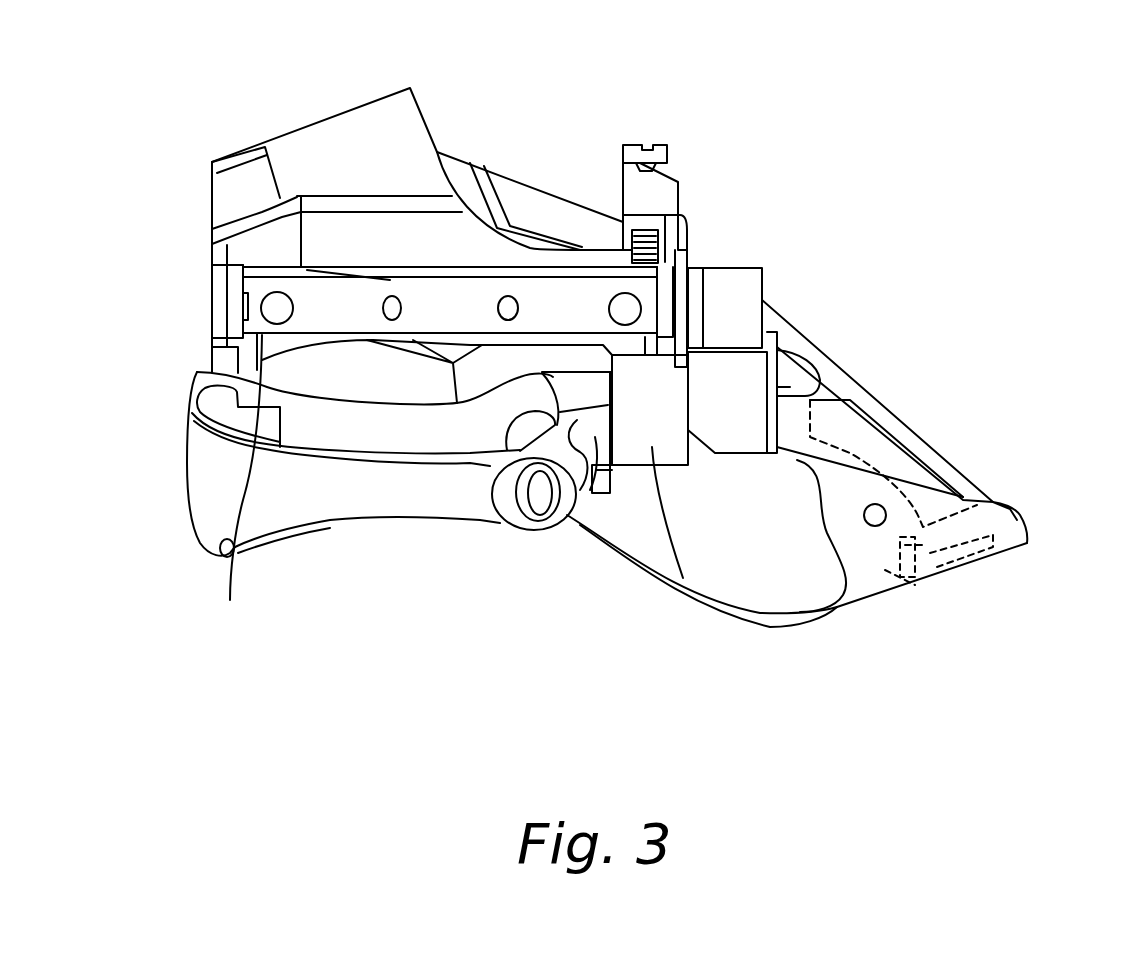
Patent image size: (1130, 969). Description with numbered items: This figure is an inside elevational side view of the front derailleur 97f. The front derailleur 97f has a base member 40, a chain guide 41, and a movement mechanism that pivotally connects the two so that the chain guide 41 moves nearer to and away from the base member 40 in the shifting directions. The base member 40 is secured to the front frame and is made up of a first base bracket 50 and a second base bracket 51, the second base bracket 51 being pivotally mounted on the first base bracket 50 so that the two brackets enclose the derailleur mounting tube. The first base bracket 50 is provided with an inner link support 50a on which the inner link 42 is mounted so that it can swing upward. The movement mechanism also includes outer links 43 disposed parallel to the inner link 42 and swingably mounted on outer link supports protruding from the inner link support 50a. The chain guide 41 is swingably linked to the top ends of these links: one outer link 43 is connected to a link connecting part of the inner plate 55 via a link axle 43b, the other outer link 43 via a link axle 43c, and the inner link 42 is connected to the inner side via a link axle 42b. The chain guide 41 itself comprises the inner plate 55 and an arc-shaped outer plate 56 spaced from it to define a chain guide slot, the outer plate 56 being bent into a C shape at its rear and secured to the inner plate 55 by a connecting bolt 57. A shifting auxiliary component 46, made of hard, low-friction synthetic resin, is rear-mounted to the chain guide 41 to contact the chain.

The base member 40 is at (380, 545).
The chain guide 41 is at (945, 403).
The inner link 42 is at (652, 447).
The link axle 42b is at (665, 335).
The outer link 43 is at (233, 305).
The link axle 43b is at (230, 600).
The link axle 43c is at (653, 303).
The shifting auxiliary component 46 is at (1018, 513).
The first base bracket 50 is at (445, 440).
The inner link support 50a is at (572, 507).
The second base bracket 51 is at (323, 508).
The inner plate 55 is at (860, 588).
The outer plate 56 is at (828, 364).
The connecting bolt 57 is at (875, 520).
The front derailleur 97f is at (753, 183).